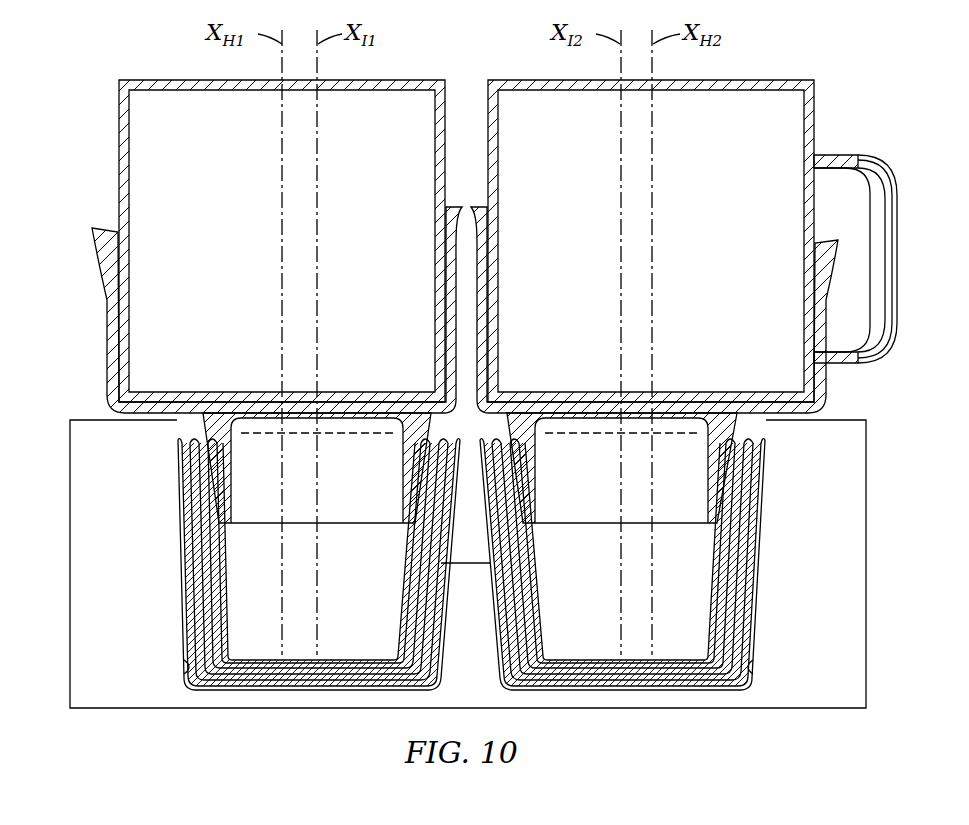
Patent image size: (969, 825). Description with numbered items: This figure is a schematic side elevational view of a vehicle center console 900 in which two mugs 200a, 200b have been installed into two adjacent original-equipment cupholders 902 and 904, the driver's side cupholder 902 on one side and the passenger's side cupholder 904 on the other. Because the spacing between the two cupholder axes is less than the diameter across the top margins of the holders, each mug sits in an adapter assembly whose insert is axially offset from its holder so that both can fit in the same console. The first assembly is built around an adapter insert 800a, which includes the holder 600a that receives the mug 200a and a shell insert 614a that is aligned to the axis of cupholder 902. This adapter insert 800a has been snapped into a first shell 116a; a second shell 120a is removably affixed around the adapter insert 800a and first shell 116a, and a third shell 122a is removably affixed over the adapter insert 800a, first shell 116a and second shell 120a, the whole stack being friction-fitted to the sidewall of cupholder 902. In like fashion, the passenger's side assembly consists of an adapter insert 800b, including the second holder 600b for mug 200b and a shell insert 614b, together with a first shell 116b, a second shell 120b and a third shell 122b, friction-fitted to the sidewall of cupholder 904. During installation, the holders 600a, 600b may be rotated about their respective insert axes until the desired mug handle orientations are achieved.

The mug 200a is at (156, 80).
The mug 200b is at (778, 80).
The holder 600a is at (107, 328).
The second holder 600b is at (828, 390).
The shell insert 614a is at (228, 468).
The shell insert 614b is at (714, 466).
The adapter insert 800a is at (180, 558).
The adapter insert 800b is at (760, 556).
The first shell 116a is at (214, 540).
The first shell 116b is at (742, 538).
The second shell 120a is at (212, 578).
The second shell 120b is at (738, 583).
The third shell 122a is at (202, 598).
The third shell 122b is at (742, 604).
The cupholder 902 is at (180, 664).
The cupholder 904 is at (758, 664).
The center console 900 is at (866, 688).